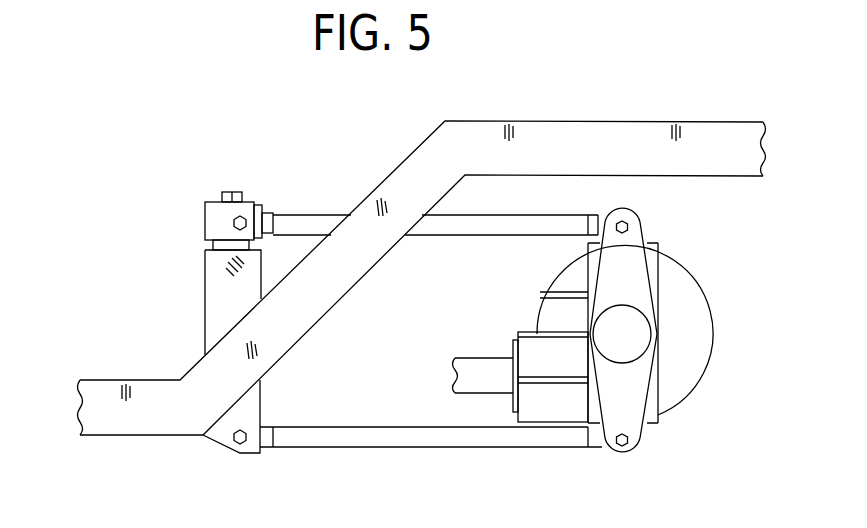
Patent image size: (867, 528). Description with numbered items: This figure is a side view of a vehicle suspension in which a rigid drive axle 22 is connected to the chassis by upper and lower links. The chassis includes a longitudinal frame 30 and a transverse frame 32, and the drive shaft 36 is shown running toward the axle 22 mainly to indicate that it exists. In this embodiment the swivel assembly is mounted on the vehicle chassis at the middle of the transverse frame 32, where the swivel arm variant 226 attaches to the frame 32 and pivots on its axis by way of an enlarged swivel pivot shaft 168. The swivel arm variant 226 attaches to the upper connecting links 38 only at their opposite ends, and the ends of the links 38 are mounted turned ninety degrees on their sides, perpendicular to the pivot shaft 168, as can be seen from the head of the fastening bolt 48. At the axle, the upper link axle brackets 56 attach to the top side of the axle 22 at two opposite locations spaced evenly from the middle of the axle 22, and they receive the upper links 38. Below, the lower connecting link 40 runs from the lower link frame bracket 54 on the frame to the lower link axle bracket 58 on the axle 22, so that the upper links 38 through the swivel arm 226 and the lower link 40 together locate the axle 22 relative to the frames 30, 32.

The rigid drive axle 22 is at (695, 311).
The longitudinal frame 30 is at (423, 146).
The transverse frame 32 is at (217, 291).
The drive shaft 36 is at (483, 372).
The upper connecting link 38 is at (498, 230).
The lower connecting link 40 is at (457, 438).
The fastening bolt 48 is at (243, 217).
The lower link frame bracket 54 is at (223, 443).
The upper link axle bracket 56 is at (632, 247).
The lower link axle bracket 58 is at (635, 405).
The swivel pivot shaft 168 is at (212, 245).
The swivel arm variant 226 is at (218, 213).